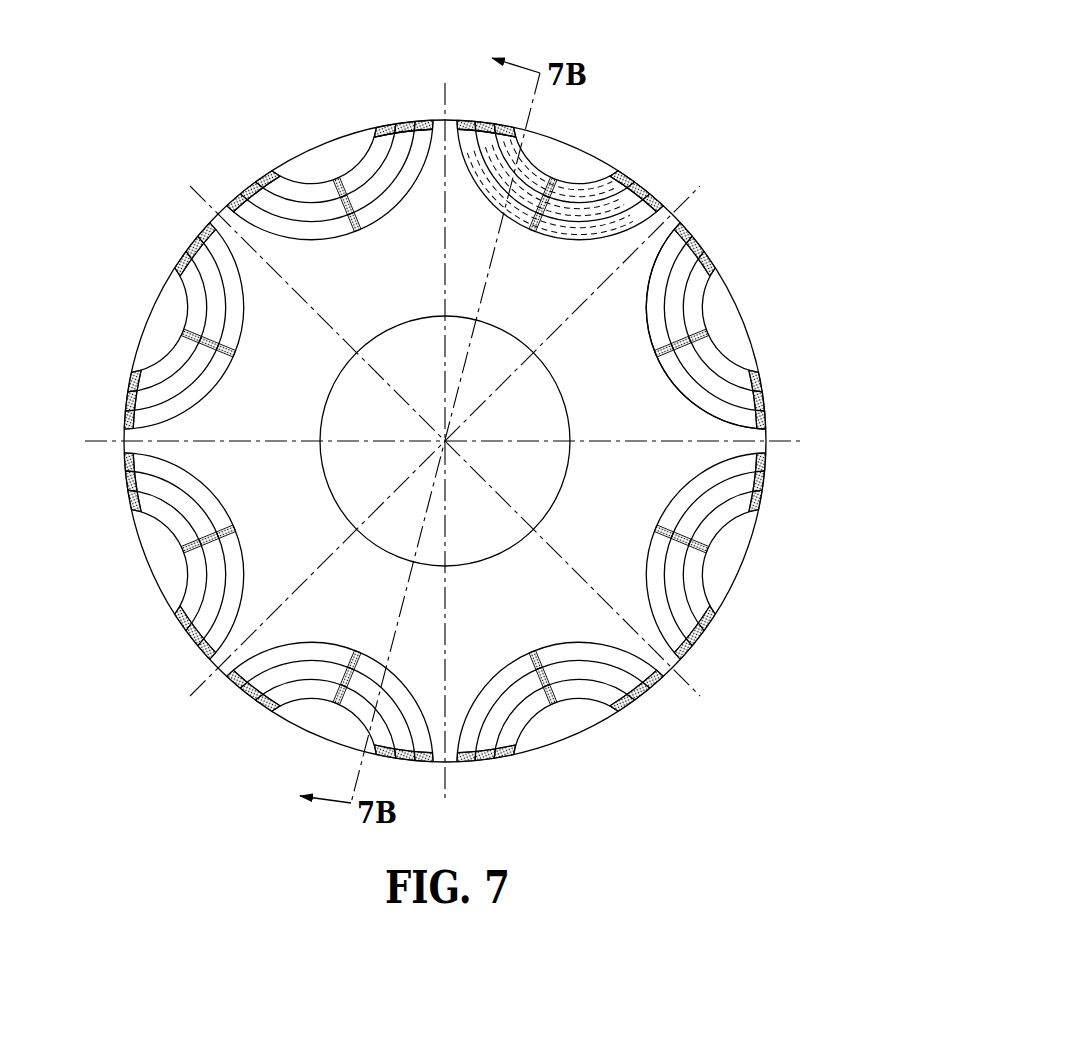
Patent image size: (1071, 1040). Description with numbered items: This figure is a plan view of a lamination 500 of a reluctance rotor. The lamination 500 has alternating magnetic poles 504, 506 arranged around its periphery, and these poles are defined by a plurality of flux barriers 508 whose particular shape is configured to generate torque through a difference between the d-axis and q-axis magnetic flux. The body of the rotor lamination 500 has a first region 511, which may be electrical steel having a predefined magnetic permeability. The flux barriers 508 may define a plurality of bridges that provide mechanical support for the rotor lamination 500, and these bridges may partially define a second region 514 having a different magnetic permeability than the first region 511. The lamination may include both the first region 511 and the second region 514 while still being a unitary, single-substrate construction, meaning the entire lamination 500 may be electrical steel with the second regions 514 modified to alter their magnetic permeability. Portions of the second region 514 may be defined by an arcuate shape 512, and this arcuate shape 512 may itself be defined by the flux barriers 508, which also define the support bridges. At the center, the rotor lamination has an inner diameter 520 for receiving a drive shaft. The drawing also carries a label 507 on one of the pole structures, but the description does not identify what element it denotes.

The lamination 500 is at (672, 48).
The magnetic pole 504 is at (318, 136).
The magnetic pole 506 is at (573, 136).
The passage wall 507 is at (720, 278).
The flux barrier 508 is at (422, 120).
The first region 511 is at (247, 260).
The arcuate shape 512 is at (562, 238).
The second region 514 is at (460, 125).
The inner diameter 520 is at (558, 385).